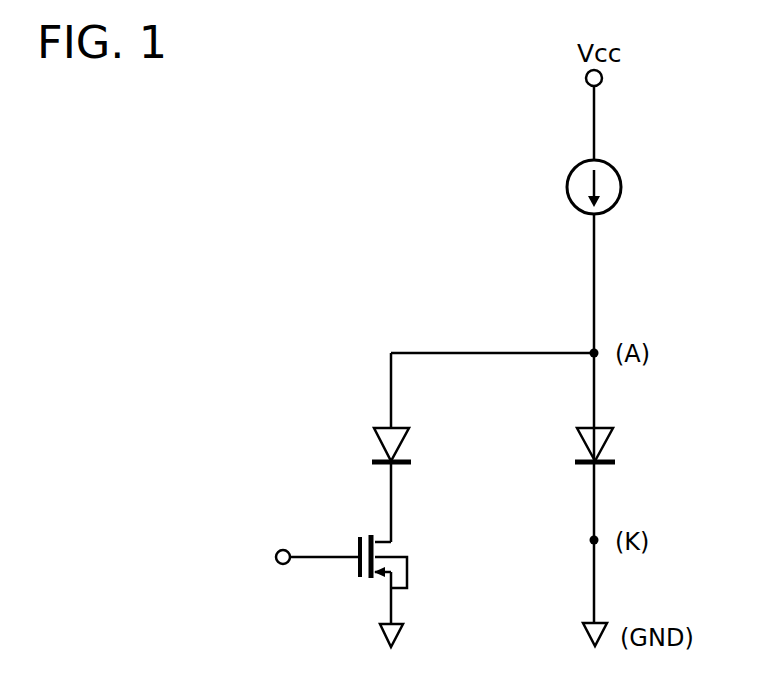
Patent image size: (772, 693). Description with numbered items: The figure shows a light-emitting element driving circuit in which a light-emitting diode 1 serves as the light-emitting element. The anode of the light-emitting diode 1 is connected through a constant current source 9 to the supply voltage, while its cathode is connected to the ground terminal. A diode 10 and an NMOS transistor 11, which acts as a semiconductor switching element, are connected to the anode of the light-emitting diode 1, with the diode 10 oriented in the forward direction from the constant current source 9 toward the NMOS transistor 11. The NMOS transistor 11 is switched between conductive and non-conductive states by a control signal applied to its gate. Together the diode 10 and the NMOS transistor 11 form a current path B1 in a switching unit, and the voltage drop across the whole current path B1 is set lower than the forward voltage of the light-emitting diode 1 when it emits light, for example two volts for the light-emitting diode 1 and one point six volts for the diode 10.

The LED 1 is at (630, 457).
The constant current source 9 is at (621, 187).
The diode 10 is at (409, 444).
The NMOS transistor 11 is at (413, 561).
The current path B1 is at (389, 386).